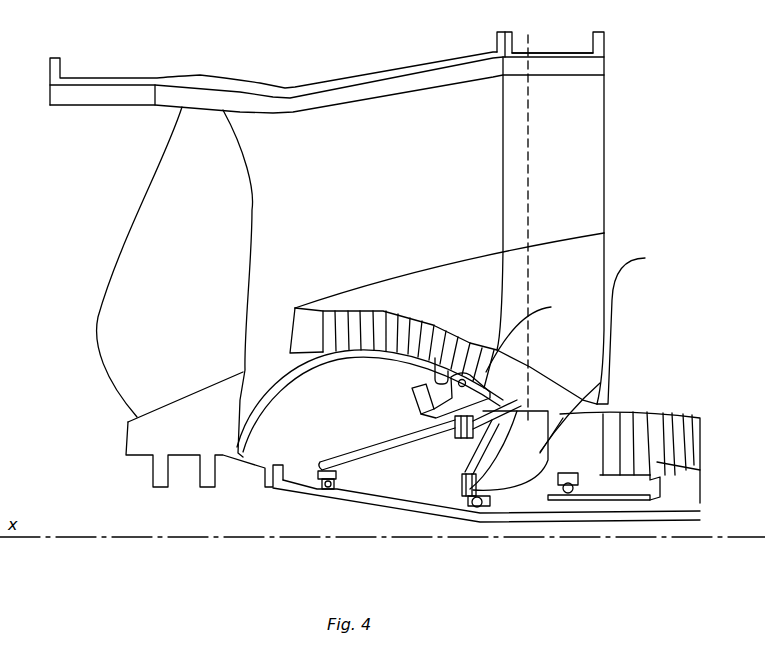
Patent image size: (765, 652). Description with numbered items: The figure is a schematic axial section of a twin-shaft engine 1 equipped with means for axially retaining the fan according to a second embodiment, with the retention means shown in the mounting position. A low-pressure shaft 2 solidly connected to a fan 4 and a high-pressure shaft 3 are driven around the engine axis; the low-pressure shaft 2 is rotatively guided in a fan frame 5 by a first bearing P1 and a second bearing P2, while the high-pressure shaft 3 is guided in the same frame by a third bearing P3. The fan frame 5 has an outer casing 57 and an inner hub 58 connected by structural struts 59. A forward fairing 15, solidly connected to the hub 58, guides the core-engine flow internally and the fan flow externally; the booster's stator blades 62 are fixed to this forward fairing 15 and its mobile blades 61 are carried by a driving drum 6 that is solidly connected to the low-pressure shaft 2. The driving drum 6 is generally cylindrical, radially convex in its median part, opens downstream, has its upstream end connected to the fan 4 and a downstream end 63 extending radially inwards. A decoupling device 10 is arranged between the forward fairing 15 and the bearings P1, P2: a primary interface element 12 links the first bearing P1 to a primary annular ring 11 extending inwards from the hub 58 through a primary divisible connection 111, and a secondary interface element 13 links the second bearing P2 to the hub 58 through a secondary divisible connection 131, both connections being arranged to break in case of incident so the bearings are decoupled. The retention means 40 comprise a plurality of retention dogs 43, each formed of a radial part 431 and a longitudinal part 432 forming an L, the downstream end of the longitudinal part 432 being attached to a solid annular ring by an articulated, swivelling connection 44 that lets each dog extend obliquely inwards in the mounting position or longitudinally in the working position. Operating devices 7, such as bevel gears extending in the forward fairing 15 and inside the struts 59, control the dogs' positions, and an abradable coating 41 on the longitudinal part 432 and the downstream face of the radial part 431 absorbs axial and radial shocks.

The twin-shaft engine 1 is at (86, 174).
The low-pressure shaft 2 is at (285, 490).
The high-pressure shaft 3 is at (640, 500).
The fan 4 is at (132, 273).
The fan frame 5 is at (672, 75).
The driving drum 6 is at (262, 393).
The operating devices 7 is at (528, 131).
The decoupling device 10 is at (548, 412).
The primary annular ring 11 is at (513, 397).
The primary interface element 12 is at (362, 455).
The secondary interface element 13 is at (481, 466).
The forward fairing 15 is at (413, 293).
The retention means 40 is at (544, 358).
The abradable coating 41 is at (435, 360).
The retention dog 43 is at (405, 407).
The articulated connection 44 is at (529, 337).
The outer casing 57 is at (593, 70).
The hub 58 is at (632, 329).
The structural struts 59 is at (585, 171).
The mobile blades 61 is at (338, 327).
The stator blades 62 is at (308, 338).
The downstream end 63 is at (453, 378).
The primary divisible connection 111 is at (457, 440).
The secondary divisible connection 131 is at (460, 483).
The radial part 431 is at (407, 389).
The longitudinal part 432 is at (412, 432).
The first bearing P1 is at (323, 492).
The second bearing P2 is at (485, 510).
The third bearing P3 is at (572, 498).